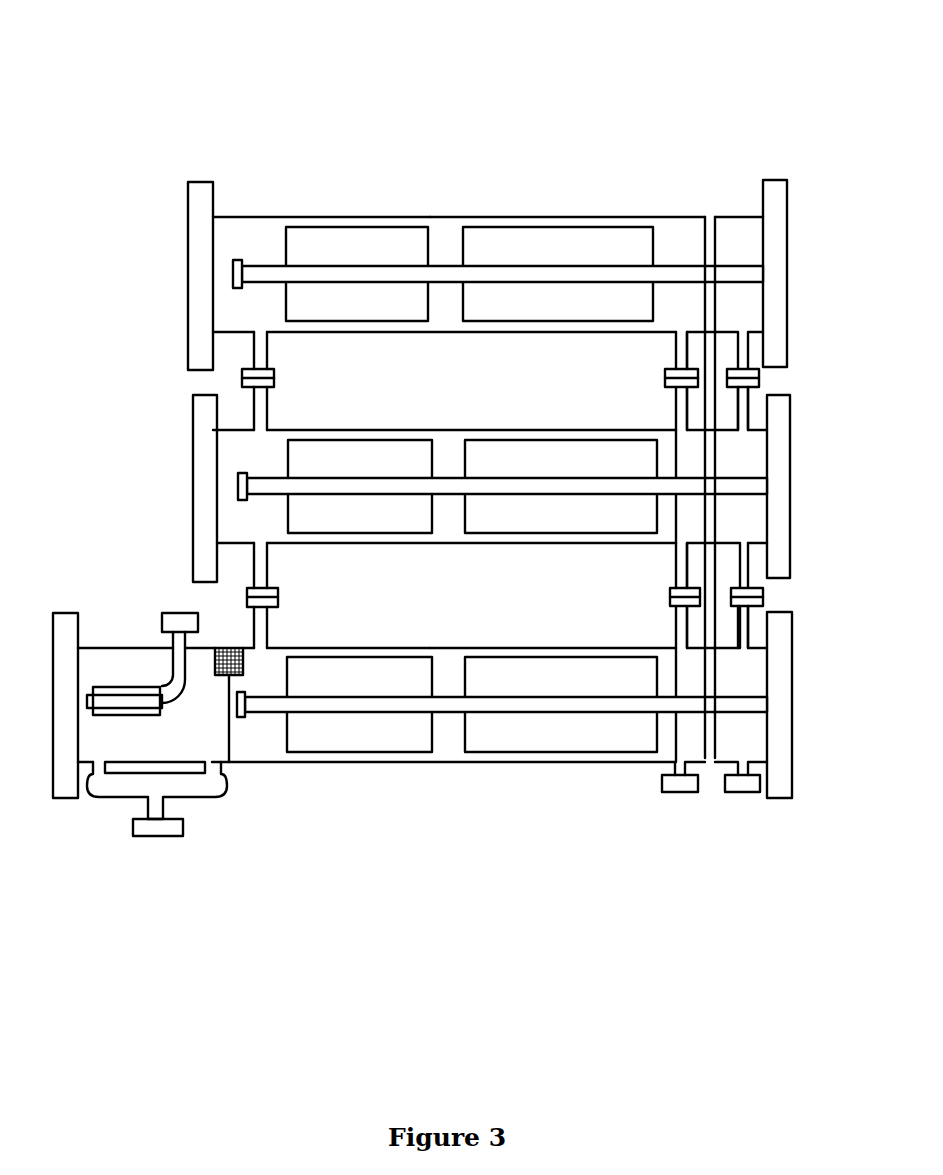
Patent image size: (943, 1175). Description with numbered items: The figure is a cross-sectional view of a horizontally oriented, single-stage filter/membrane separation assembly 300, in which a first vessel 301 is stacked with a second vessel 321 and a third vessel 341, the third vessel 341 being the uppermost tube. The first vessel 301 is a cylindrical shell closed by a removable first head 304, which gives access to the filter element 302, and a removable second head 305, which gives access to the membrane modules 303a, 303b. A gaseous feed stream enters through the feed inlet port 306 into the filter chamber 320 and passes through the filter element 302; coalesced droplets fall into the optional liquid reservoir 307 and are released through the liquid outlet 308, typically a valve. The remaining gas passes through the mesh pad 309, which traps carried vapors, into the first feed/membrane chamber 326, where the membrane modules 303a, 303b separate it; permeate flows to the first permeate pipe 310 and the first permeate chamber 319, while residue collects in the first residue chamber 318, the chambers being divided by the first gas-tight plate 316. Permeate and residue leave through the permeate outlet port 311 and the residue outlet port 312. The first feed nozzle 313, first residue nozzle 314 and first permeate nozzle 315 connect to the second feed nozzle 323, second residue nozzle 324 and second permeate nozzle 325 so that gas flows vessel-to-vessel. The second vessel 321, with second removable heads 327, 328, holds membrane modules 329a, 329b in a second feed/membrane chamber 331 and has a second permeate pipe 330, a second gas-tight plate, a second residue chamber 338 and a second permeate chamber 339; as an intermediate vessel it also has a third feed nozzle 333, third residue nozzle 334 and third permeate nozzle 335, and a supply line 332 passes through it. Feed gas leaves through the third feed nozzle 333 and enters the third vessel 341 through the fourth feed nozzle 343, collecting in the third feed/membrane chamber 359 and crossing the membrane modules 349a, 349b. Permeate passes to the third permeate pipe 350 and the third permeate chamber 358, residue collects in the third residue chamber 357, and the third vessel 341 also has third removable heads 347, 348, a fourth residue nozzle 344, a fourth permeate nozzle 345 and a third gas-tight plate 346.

The assembly 300 is at (478, 36).
The first vessel 301 is at (455, 763).
The filter element 302 is at (100, 690).
The membrane module 303a is at (300, 668).
The membrane module 303b is at (480, 660).
The removable first head 304 is at (54, 615).
The removable second head 305 is at (792, 798).
The feed inlet port 306 is at (180, 606).
The liquid reservoir 307 is at (103, 798).
The liquid outlet 308 is at (155, 836).
The mesh pad 309 is at (222, 648).
The first permeate pipe 310 is at (355, 712).
The permeate outlet port 311 is at (748, 790).
The residue outlet port 312 is at (661, 796).
The first feed nozzle 313 is at (268, 620).
The first residue nozzle 314 is at (678, 613).
The first permeate nozzle 315 is at (745, 612).
The first gas-tight plate 316 is at (705, 758).
The first residue chamber 318 is at (675, 665).
The first permeate chamber 319 is at (755, 741).
The filter chamber 320 is at (85, 650).
The second vessel 321 is at (456, 543).
The second feed nozzle 323 is at (267, 562).
The second residue nozzle 324 is at (680, 550).
The second permeate nozzle 325 is at (742, 551).
The first feed/membrane chamber 326 is at (277, 755).
The second removable head 327 is at (192, 545).
The second removable head 328 is at (790, 548).
The membrane module 329a is at (312, 447).
The membrane module 329b is at (480, 440).
The second permeate pipe 330 is at (370, 488).
The second feed/membrane chamber 331 is at (243, 535).
The supply line section 332 is at (709, 428).
The third feed nozzle 333 is at (267, 410).
The third residue nozzle 334 is at (677, 393).
The third permeate nozzle 335 is at (750, 392).
The second residue chamber 338 is at (675, 447).
The second permeate chamber 339 is at (750, 453).
The third vessel 341 is at (497, 330).
The fourth feed nozzle 343 is at (267, 340).
The fourth residue nozzle 344 is at (677, 338).
The fourth permeate nozzle 345 is at (735, 341).
The third gas-tight plate 346 is at (705, 218).
The third removable head 347 is at (187, 182).
The third removable head 348 is at (787, 180).
The membrane module 349a is at (318, 240).
The membrane module 349b is at (497, 240).
The third permeate pipe 350 is at (395, 273).
The third residue chamber 357 is at (662, 228).
The third permeate chamber 358 is at (720, 223).
The third feed/membrane chamber 359 is at (248, 226).